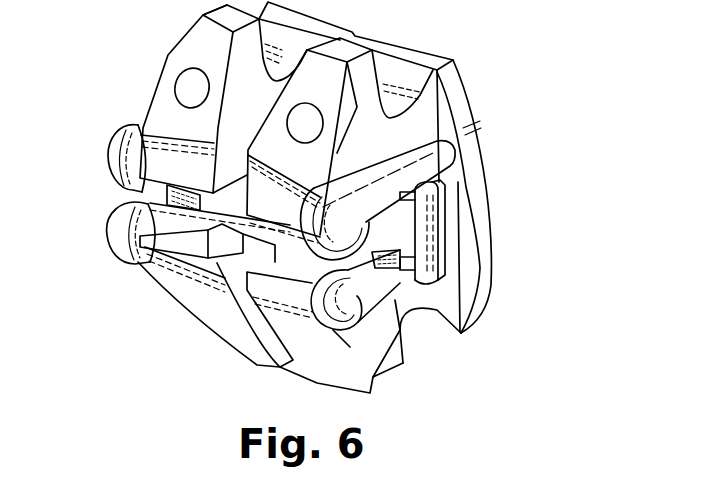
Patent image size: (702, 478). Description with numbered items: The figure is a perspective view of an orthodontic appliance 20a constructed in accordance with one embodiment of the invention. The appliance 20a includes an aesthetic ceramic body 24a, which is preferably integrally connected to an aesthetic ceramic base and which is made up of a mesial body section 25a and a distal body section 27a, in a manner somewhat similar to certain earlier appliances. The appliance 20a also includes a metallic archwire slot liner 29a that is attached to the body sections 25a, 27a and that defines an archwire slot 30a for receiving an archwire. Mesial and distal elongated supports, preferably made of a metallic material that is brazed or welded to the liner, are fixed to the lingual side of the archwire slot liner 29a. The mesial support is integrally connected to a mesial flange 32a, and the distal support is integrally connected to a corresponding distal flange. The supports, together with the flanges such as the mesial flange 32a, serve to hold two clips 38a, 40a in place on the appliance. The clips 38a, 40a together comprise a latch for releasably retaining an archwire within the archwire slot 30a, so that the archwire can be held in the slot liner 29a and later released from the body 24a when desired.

The orthodontic appliance 20a is at (183, 350).
The aesthetic ceramic body 24a is at (413, 345).
The mesial body section 25a is at (175, 63).
The distal body section 27a is at (350, 378).
The archwire slot liner 29a is at (170, 234).
The archwire slot 30a is at (175, 207).
The mesial flange 32a is at (437, 244).
The clip 38a is at (450, 167).
The clip 40a is at (119, 151).